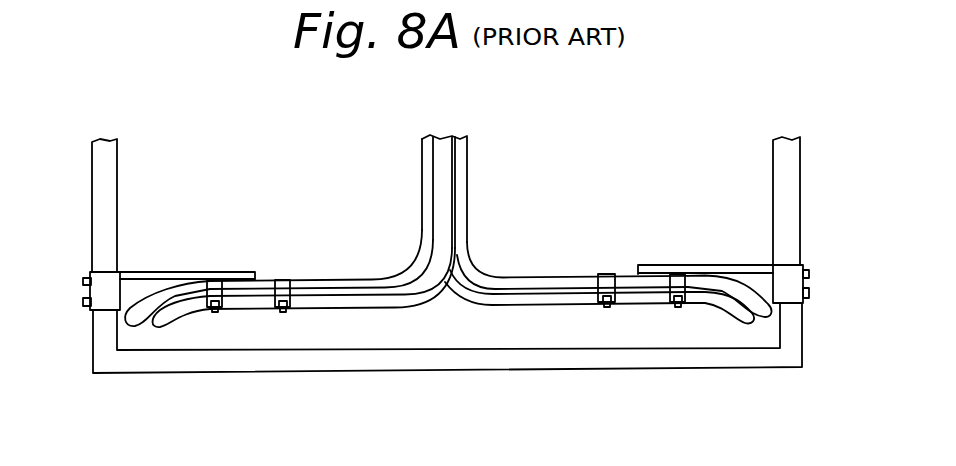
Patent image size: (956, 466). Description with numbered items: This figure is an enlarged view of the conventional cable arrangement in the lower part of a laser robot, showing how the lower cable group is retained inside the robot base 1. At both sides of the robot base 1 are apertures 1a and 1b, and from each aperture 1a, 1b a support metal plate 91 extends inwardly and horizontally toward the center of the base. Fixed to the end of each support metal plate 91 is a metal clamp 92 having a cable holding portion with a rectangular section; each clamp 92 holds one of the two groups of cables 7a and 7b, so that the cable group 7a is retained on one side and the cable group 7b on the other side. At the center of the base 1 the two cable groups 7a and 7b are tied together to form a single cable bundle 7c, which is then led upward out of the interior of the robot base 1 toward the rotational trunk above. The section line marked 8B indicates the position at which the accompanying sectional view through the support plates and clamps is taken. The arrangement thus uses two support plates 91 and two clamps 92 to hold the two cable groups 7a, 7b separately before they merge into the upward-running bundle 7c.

The robot base 1 is at (640, 357).
The aperture 1a is at (792, 265).
The aperture 1b is at (92, 272).
The group of cables 7a is at (325, 306).
The group of cables 7b is at (538, 302).
The cable bundle 7c is at (469, 159).
The support metal plate 91 is at (155, 278).
The metal clamp 92 is at (286, 281).
The section line 8B- 8B is at (84, 177).